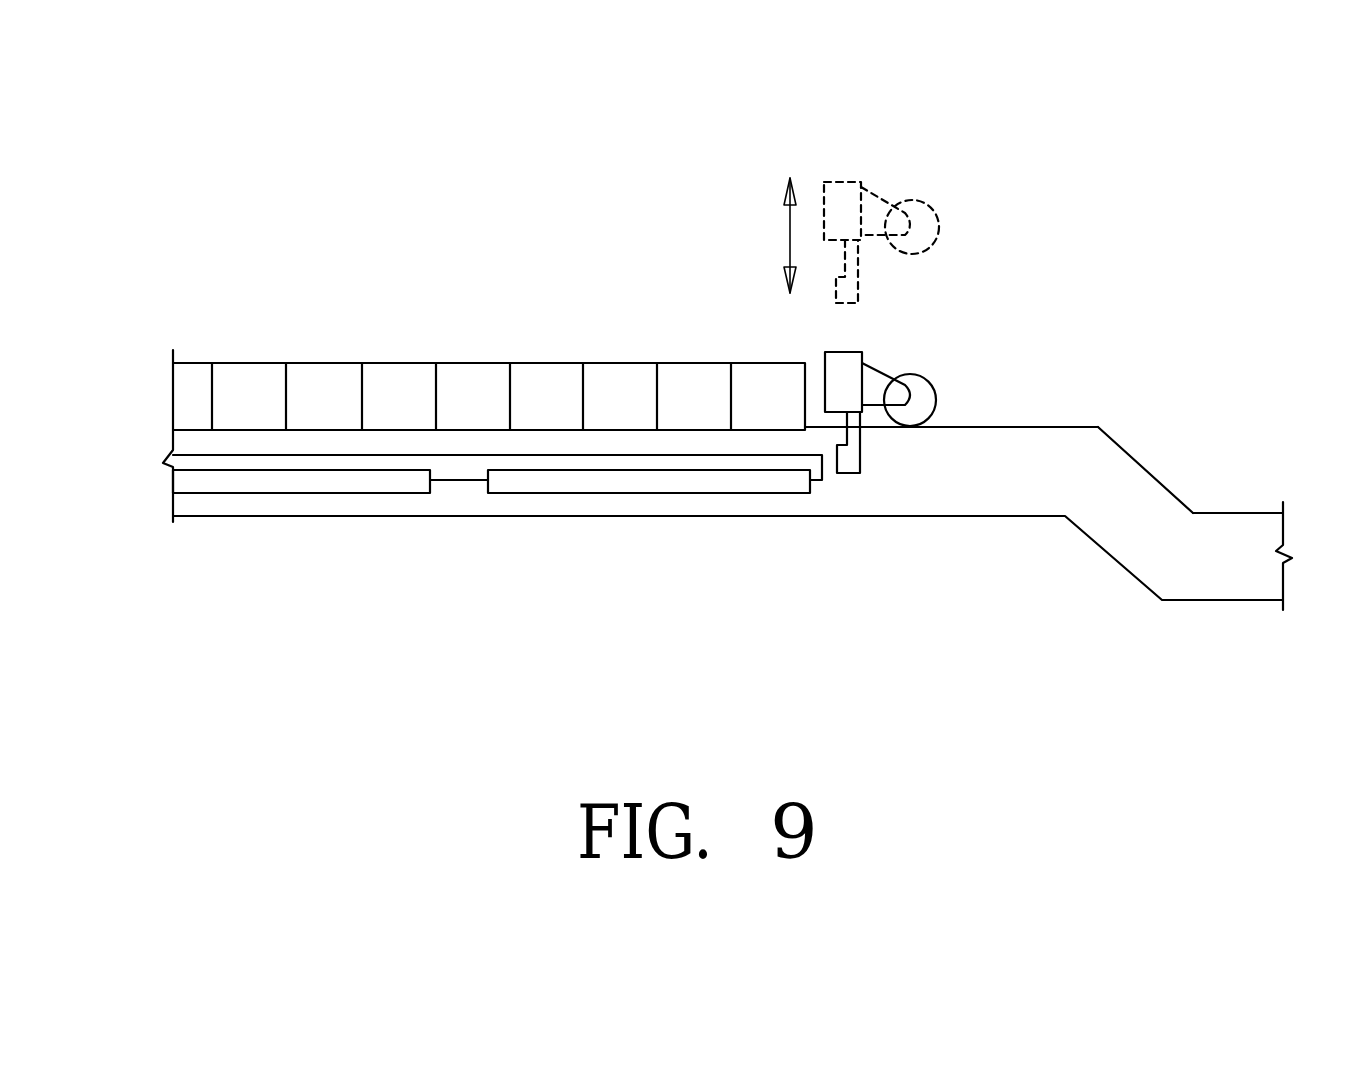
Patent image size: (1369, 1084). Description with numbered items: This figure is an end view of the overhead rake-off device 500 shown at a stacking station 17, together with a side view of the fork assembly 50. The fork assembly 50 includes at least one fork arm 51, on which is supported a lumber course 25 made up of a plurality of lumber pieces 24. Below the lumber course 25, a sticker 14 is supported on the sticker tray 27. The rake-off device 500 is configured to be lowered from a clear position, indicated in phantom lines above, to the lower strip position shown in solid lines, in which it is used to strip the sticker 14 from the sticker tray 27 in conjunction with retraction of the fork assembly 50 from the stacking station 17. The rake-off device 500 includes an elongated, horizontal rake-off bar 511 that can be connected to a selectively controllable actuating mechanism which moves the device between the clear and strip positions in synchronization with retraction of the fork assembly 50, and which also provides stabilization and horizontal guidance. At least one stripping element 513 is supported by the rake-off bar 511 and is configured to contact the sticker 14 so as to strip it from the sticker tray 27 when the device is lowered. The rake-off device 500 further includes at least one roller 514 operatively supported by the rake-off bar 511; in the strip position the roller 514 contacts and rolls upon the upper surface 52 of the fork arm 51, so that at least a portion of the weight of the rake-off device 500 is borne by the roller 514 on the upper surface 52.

The stacking station 17 is at (400, 589).
The lumber course 25 is at (489, 313).
The lumber pieces 24 is at (473, 373).
The sticker tray 27 is at (491, 523).
The sticker 14 is at (457, 468).
The fork assembly 50 is at (1073, 483).
The upper surface 52 is at (1065, 423).
The fork arm 51 is at (1135, 468).
The rake-off device 500 is at (899, 305).
The rake-off bar 511 is at (837, 353).
The roller 514 is at (915, 372).
The stripping element 513 is at (852, 462).